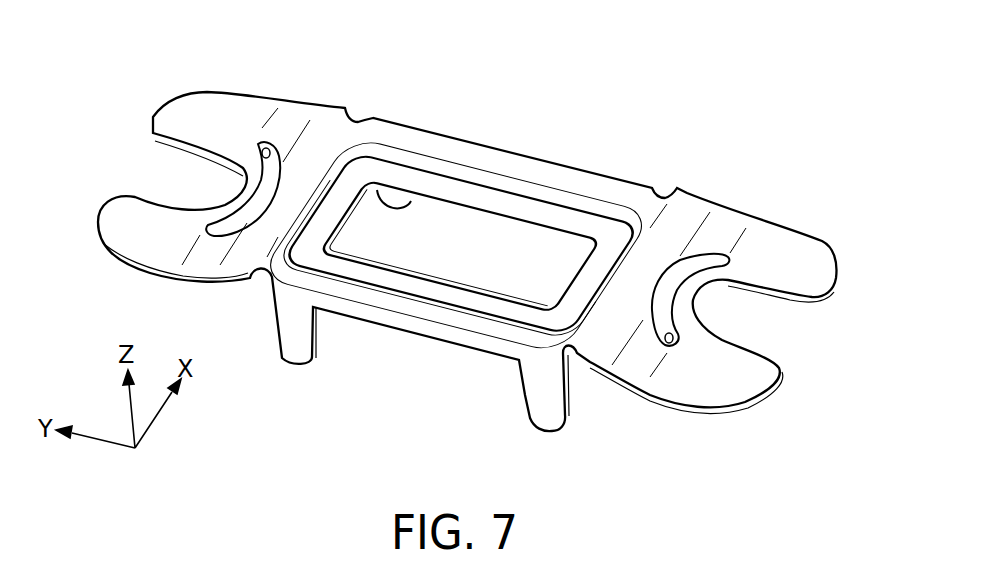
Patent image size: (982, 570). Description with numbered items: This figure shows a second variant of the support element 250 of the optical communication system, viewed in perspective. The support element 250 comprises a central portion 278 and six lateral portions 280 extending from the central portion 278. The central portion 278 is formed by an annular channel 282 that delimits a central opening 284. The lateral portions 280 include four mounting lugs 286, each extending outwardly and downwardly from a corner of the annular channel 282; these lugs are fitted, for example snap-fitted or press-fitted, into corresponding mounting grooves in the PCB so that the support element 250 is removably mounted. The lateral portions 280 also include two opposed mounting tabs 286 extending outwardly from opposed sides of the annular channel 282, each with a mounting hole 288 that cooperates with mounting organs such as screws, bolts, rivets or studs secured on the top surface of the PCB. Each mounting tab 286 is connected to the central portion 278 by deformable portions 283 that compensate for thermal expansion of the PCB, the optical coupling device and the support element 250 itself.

The support element 250 is at (676, 78).
The central portion 278 is at (515, 118).
The lateral portions 280 is at (128, 151).
The annular channel 282 is at (447, 181).
The deformable portions 283 is at (307, 167).
The central opening 284 is at (535, 243).
The mounting lug / mounting tab 286 is at (190, 112).
The mounting hole 288 is at (263, 143).